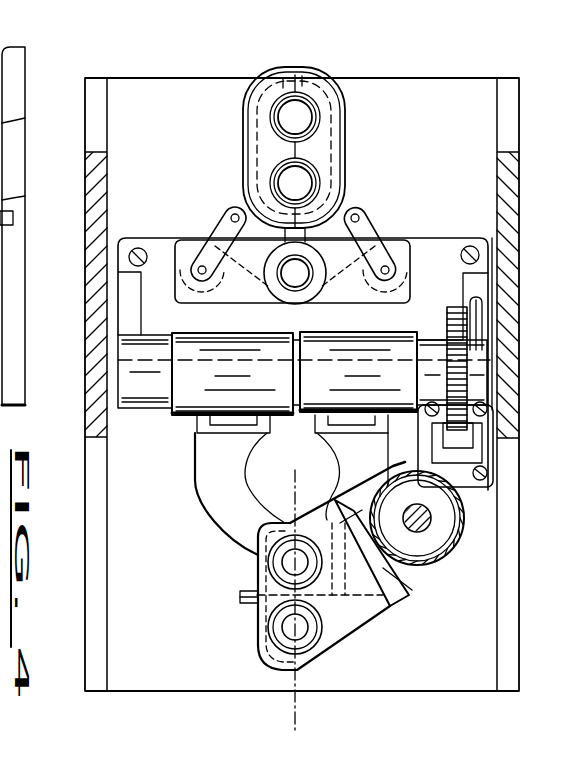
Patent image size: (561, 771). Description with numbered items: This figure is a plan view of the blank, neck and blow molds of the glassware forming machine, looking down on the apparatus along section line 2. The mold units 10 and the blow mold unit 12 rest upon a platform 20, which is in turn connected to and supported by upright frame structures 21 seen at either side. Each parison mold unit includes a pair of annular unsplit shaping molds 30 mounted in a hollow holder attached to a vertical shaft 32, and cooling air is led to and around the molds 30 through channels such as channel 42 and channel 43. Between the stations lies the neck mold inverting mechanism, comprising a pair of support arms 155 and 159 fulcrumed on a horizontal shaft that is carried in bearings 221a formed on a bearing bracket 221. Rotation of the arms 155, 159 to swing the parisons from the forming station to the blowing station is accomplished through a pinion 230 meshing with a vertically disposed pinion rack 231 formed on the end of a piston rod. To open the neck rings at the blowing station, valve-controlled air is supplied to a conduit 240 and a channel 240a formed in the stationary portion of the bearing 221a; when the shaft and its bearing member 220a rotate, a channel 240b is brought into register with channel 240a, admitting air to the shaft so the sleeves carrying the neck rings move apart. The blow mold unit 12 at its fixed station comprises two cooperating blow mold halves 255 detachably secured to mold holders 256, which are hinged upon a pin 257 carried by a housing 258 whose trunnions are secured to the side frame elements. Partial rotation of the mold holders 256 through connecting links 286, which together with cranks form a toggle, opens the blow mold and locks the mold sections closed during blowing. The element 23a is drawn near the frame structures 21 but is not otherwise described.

The mold unit 10 is at (8, 270).
The blow mold unit 12 is at (351, 134).
The platform 20 is at (302, 384).
The upright frame structures 21 is at (18, 383).
The guide member 23a is at (33, 138).
The annular unsplit shaping molds 30 is at (277, 627).
The vertical shaft 32 is at (428, 523).
The channel 42 is at (412, 545).
The channel 43 is at (372, 612).
The support arm 155 is at (354, 477).
The support arm 159 is at (211, 487).
The bearing member 220a is at (8, 224).
The bearing bracket 221 is at (155, 238).
The bearings 221a is at (25, 107).
The pinion 230 is at (8, 47).
The pinion rack 231 is at (33, 292).
The conduit 240 is at (25, 266).
The channel 240a is at (23, 233).
The channel 240b is at (25, 168).
The blow mold halves 255 is at (302, 80).
The mold holders 256 is at (247, 110).
The pin 257 is at (313, 270).
The housing 258 is at (395, 262).
The links 286 is at (218, 237).
The section line 2- 2 is at (316, 490).